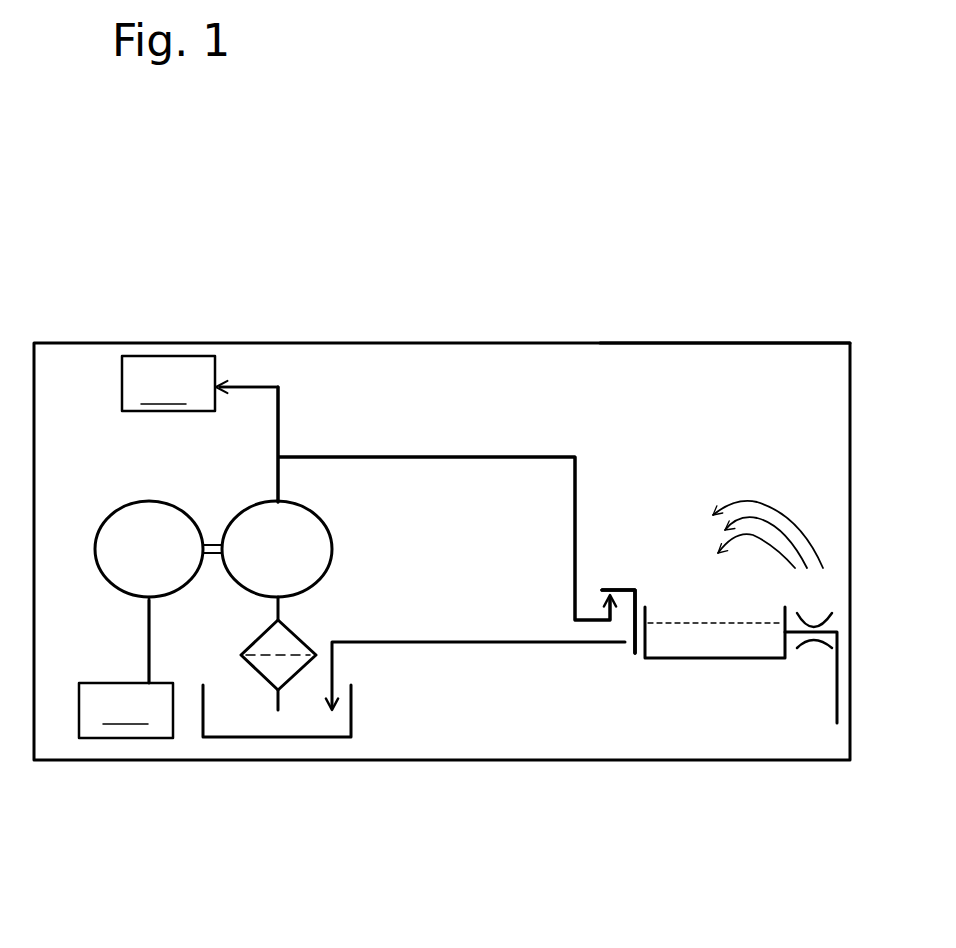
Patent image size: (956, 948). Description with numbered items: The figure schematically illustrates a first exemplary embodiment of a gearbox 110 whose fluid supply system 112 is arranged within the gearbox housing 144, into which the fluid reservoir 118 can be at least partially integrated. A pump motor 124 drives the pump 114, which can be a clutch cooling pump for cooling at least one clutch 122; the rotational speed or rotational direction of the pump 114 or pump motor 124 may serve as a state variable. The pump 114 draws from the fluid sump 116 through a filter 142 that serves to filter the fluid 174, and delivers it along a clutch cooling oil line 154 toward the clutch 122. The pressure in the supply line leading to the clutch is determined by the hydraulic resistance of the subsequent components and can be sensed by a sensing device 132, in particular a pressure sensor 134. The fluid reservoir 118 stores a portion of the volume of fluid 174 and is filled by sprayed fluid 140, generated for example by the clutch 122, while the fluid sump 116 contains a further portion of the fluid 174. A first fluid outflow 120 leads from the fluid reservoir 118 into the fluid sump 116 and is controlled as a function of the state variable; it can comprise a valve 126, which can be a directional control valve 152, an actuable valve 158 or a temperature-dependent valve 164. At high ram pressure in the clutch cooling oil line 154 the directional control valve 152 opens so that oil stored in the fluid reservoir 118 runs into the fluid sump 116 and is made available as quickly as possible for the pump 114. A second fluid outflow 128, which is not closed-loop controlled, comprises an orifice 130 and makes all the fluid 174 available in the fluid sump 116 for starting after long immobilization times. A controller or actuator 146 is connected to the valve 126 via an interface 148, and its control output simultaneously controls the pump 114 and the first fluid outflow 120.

The gearbox 110 is at (242, 252).
The fluid supply system 112 is at (325, 388).
The pump 114 is at (332, 549).
The fluid sump 116 is at (303, 738).
The fluid reservoir 118 is at (655, 658).
The first fluid outflow 120 is at (540, 642).
The clutch 122 is at (168, 383).
The pump motor 124 is at (113, 512).
The valve 126 is at (627, 590).
The second fluid outflow 128 is at (797, 653).
The orifice 130 is at (800, 613).
The sensing device 132 is at (278, 457).
The pressure sensor 134 is at (444, 503).
The sprayed fluid 140 is at (737, 527).
The filter 142 is at (297, 680).
The gearbox housing 144 is at (708, 343).
The controller/actuator 146 is at (126, 667).
The interface 148 is at (148, 647).
The directional control valve 152 is at (618, 621).
The clutch cooling oil line 154 is at (263, 387).
The actuable valve 158 is at (618, 621).
The temperature-dependent valve 164 is at (618, 621).
The fluid 174 is at (707, 630).